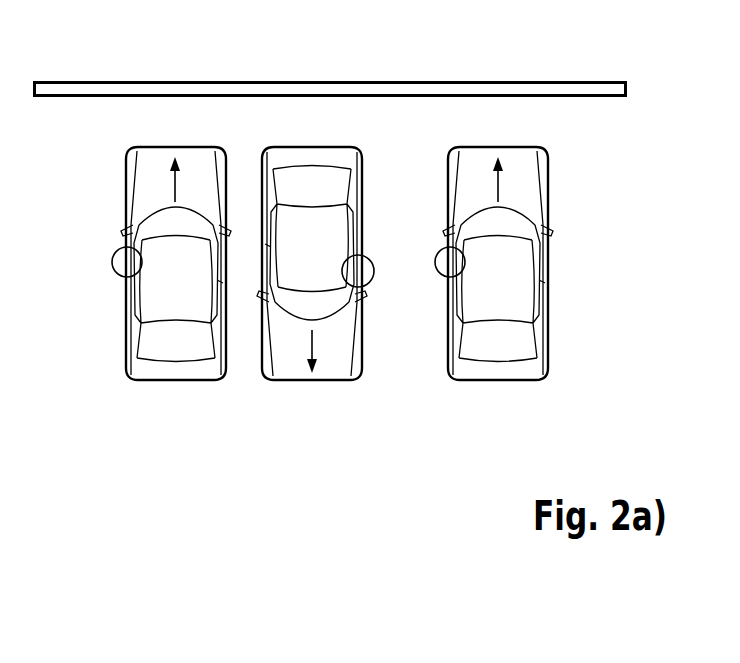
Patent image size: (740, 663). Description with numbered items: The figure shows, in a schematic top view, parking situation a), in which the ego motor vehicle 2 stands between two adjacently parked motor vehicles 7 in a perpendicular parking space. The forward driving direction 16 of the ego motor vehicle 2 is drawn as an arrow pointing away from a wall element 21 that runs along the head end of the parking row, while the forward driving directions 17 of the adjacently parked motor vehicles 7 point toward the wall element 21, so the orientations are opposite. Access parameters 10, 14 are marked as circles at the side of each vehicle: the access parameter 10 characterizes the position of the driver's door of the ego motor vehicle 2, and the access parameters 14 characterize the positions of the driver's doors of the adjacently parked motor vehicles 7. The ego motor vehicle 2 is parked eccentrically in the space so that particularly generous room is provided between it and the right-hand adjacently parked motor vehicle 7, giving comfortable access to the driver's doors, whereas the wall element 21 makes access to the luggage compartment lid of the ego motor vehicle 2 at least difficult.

The wall element 21 is at (147, 80).
The adjacently parked motor vehicle 7 is at (133, 400).
The ego motor vehicle 2 is at (273, 400).
The forward driving direction of adjacently parked motor vehicle 17 is at (176, 180).
The access parameter 14 is at (112, 262).
The access parameter 10 is at (371, 259).
The forward driving direction of ego motor vehicle 16 is at (313, 342).